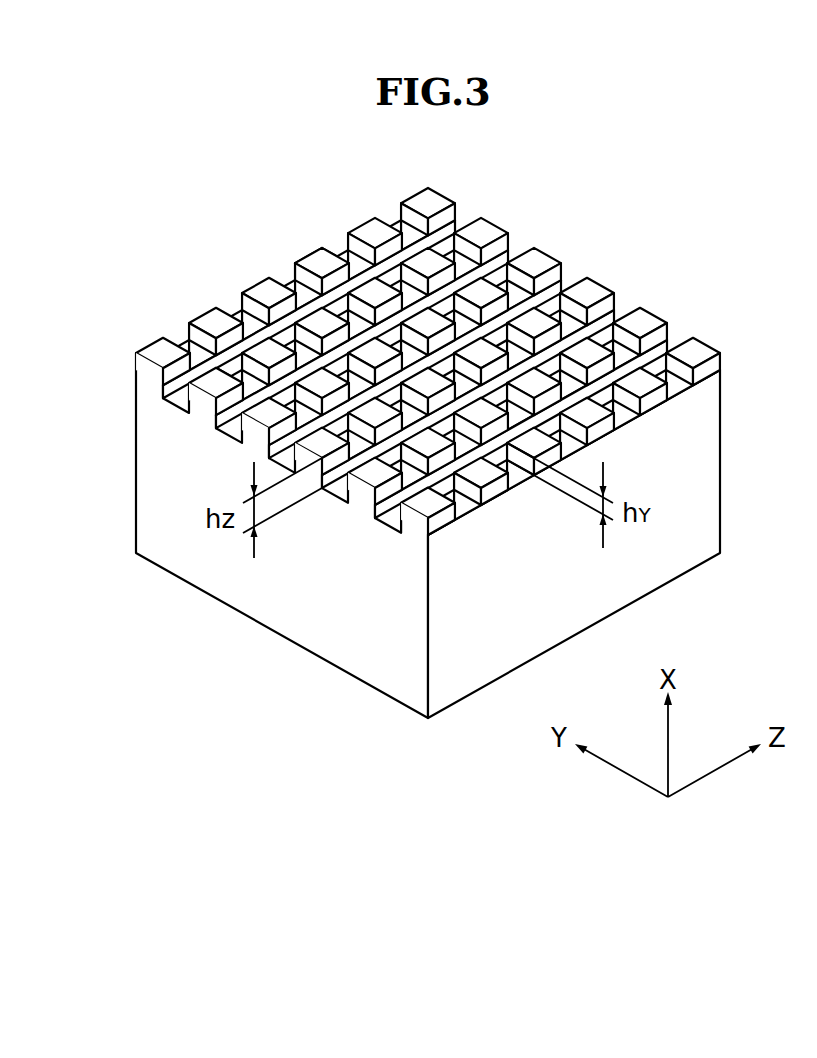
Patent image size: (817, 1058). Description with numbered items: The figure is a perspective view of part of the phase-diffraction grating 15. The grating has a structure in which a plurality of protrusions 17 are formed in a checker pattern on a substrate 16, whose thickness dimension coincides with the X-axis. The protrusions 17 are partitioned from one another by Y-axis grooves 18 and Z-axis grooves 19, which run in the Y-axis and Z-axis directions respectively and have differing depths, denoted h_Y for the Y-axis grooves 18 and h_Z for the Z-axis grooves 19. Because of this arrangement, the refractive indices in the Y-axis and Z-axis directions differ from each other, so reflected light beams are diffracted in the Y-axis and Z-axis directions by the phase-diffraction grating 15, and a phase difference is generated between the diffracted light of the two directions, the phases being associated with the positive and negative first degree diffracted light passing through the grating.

The phase-diffraction grating 15 is at (428, 452).
The substrate 16 is at (305, 650).
The protrusions 17 is at (310, 253).
The Y-axis grooves 18 is at (295, 277).
The Z-axis grooves 19 is at (243, 430).